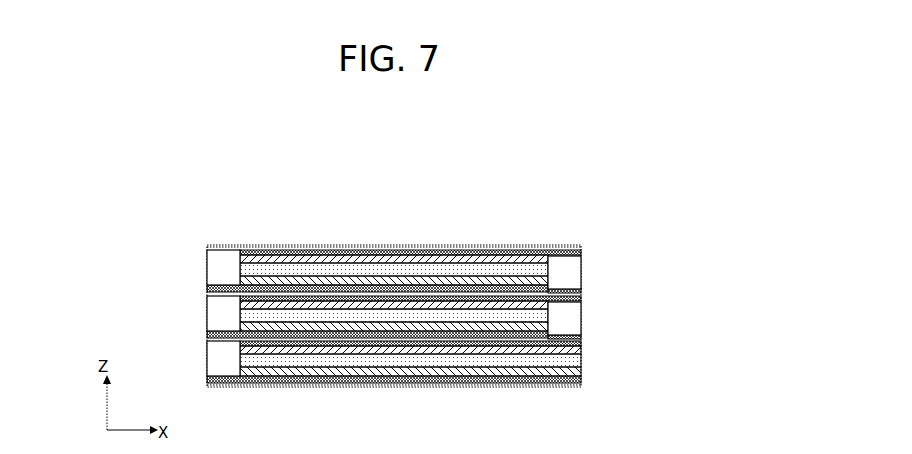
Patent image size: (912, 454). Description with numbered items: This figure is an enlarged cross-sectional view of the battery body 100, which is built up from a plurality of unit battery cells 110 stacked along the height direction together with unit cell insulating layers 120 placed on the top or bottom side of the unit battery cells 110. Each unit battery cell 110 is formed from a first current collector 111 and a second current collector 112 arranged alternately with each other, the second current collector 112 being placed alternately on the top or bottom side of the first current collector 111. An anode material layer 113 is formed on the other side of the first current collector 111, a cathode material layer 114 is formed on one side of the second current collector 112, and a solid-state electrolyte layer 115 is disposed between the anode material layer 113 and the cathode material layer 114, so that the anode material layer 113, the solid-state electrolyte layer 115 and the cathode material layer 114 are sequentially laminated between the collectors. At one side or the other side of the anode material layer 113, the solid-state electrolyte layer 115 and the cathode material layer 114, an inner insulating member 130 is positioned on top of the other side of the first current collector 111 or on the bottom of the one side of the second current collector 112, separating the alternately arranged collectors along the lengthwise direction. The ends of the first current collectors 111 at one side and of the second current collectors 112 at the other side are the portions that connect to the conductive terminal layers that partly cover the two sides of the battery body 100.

The battery body 100 is at (370, 232).
The unit battery cell 110 is at (397, 314).
The first current collector 111 is at (157, 276).
The second current collector 112 is at (208, 290).
The anode material layer 113 is at (238, 318).
The cathode material layer 114 is at (238, 303).
The solid-state electrolyte layer 115 is at (238, 310).
The unit cell insulating layer 120 is at (207, 247).
The inner insulating member 130 is at (225, 273).